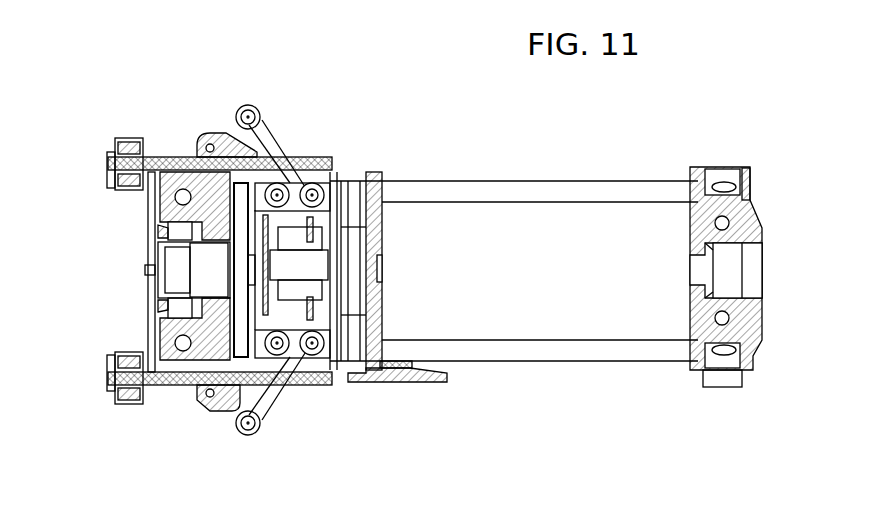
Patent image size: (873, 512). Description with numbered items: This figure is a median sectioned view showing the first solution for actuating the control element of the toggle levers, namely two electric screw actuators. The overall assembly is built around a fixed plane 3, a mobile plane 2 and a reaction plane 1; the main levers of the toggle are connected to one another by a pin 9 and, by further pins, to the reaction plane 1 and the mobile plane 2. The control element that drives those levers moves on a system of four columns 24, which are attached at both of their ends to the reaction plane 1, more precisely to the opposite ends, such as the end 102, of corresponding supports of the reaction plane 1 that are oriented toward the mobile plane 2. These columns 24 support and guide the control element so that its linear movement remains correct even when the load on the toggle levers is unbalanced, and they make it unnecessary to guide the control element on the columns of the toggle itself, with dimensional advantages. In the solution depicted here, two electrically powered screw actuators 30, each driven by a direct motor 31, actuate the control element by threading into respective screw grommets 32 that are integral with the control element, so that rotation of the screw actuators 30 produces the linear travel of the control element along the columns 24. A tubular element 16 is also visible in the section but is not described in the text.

The reaction plane 1 is at (160, 335).
The mobile plane 2 is at (384, 200).
The fixed plane 3 is at (700, 203).
The pin 9 is at (240, 107).
The tube 16 is at (540, 180).
The columns 24 is at (296, 157).
The electrically powered screw actuators 30 is at (310, 157).
The direct motors 31 is at (140, 146).
The screw grommets 32 is at (197, 150).
The end of support 102 is at (362, 178).